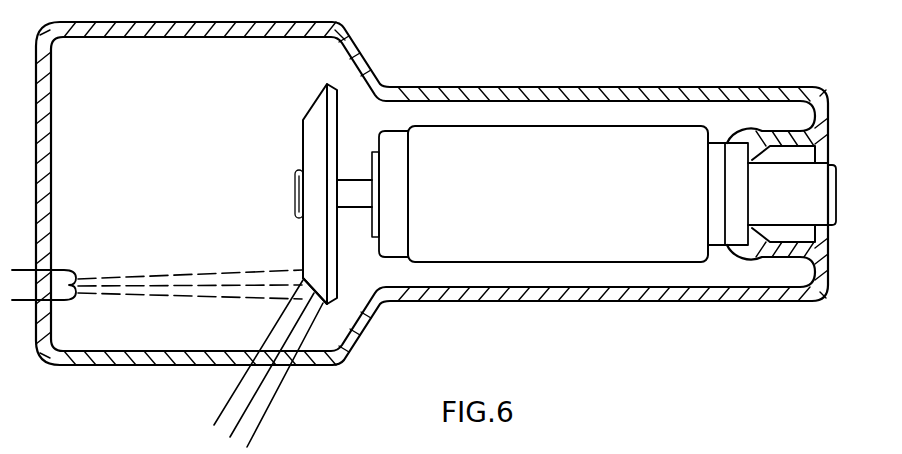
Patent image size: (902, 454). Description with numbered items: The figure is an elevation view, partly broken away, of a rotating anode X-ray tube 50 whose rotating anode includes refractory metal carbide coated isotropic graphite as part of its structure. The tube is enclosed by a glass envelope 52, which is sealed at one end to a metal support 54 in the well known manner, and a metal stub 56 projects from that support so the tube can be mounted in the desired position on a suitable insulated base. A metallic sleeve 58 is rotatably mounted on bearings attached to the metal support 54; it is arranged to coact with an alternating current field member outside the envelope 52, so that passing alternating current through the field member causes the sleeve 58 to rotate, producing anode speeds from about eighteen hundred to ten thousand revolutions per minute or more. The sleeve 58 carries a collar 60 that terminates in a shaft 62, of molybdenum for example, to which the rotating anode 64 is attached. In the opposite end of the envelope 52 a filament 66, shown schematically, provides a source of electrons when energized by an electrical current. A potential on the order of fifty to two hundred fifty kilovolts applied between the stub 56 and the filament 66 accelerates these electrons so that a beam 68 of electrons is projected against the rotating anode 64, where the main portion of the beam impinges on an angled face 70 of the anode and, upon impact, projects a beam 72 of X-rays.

The rotating anode X-ray tube 50 is at (580, 361).
The glass envelope 52 is at (745, 300).
The metal support 54 is at (737, 183).
The metal stub 56 is at (817, 203).
The metallic sleeve 58 is at (505, 132).
The collar 60 is at (390, 134).
The shaft 62 is at (350, 188).
The rotating anode 64 is at (312, 112).
The filament 66 is at (69, 259).
The beam of electrons 68 is at (157, 288).
The angled face 70 is at (313, 274).
The beam of X-rays 72 is at (274, 390).